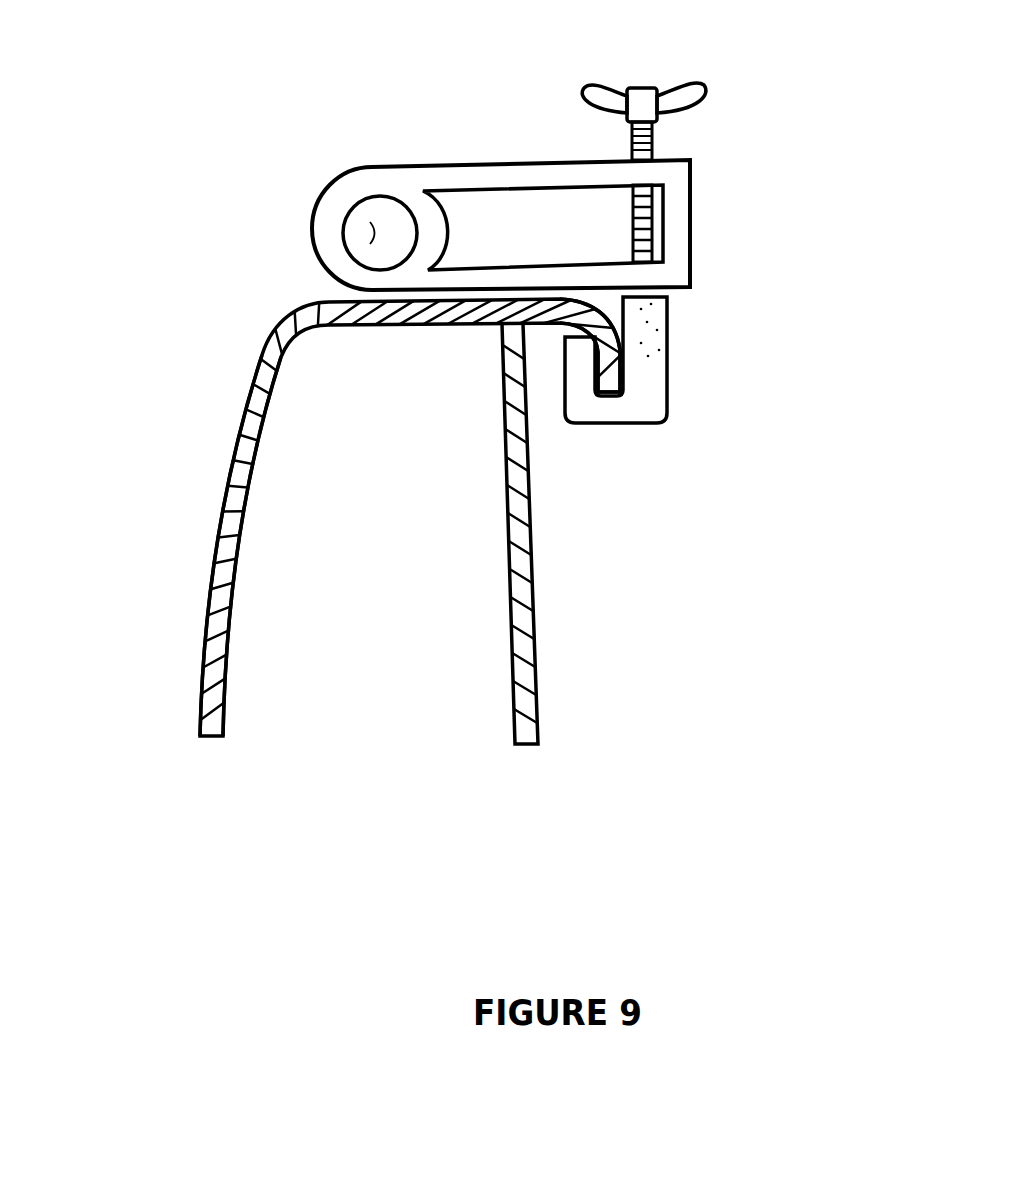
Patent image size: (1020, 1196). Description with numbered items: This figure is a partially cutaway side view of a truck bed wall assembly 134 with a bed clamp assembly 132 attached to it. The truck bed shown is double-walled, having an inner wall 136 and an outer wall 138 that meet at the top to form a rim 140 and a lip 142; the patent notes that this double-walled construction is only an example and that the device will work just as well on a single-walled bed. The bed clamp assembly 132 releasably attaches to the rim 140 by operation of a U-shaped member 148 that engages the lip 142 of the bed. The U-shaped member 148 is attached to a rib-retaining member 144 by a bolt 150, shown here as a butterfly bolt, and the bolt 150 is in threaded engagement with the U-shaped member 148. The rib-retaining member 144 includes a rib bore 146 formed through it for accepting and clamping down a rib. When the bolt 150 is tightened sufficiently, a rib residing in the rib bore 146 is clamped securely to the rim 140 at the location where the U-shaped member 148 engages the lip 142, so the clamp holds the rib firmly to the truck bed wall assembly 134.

The bed clamp assembly 132 is at (532, 241).
The truck bed wall assembly 134 is at (424, 579).
The inner wall 136 is at (548, 583).
The outer wall 138 is at (213, 417).
The rim 140 is at (275, 303).
The lip 142 is at (617, 408).
The rib-retaining member 144 is at (692, 238).
The rib bore 146 is at (370, 232).
The U-shaped member 148 is at (685, 425).
The bolt 150 is at (643, 75).